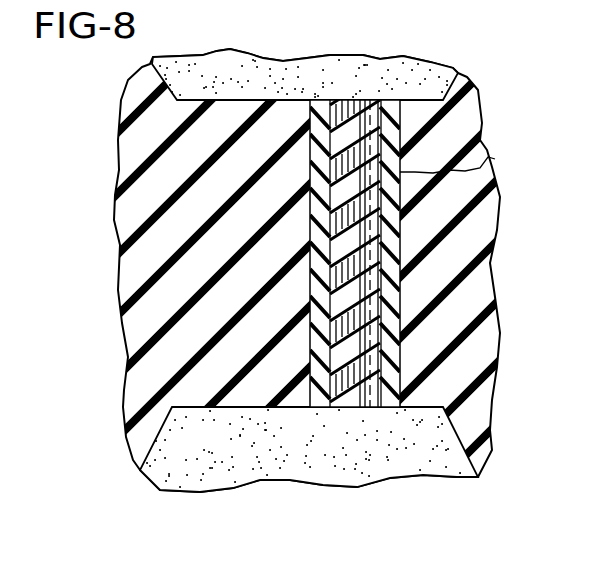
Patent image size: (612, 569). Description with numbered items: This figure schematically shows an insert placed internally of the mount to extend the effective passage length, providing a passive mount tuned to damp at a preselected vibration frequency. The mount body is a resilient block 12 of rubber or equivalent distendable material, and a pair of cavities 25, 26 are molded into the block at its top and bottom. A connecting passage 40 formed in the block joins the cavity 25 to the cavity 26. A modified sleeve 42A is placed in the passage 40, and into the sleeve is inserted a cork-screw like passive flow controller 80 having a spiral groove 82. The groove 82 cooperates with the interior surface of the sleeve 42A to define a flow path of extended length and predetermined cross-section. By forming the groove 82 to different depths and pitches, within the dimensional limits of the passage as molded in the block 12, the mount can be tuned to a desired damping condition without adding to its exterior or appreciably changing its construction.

The resilient block 12 is at (468, 287).
The cavity 25 is at (287, 72).
The cavity 26 is at (418, 458).
The connecting passage 40 is at (408, 110).
The modified sleeve 42A is at (470, 160).
The passive flow controller 80 is at (360, 243).
The spiral groove 82 is at (376, 284).